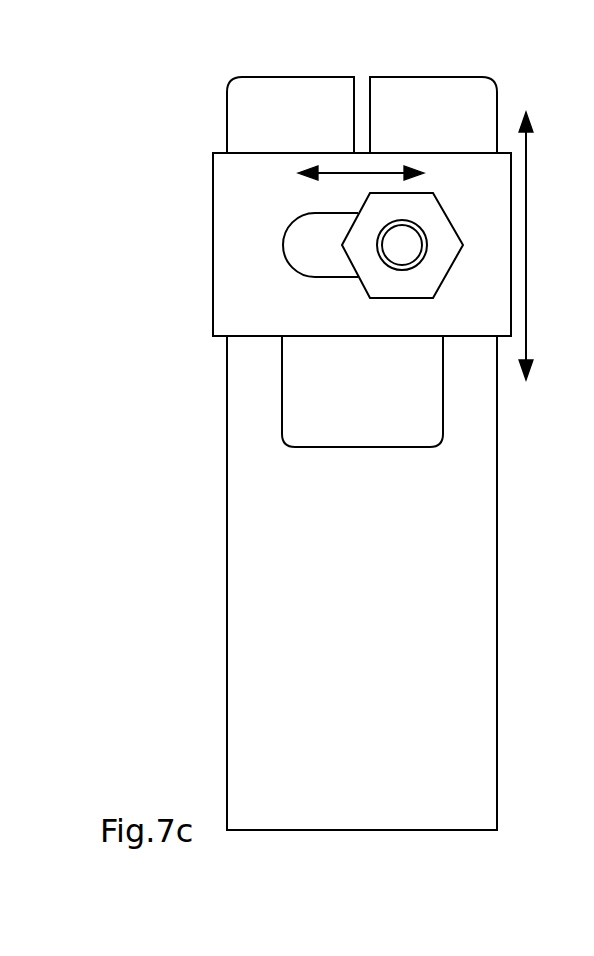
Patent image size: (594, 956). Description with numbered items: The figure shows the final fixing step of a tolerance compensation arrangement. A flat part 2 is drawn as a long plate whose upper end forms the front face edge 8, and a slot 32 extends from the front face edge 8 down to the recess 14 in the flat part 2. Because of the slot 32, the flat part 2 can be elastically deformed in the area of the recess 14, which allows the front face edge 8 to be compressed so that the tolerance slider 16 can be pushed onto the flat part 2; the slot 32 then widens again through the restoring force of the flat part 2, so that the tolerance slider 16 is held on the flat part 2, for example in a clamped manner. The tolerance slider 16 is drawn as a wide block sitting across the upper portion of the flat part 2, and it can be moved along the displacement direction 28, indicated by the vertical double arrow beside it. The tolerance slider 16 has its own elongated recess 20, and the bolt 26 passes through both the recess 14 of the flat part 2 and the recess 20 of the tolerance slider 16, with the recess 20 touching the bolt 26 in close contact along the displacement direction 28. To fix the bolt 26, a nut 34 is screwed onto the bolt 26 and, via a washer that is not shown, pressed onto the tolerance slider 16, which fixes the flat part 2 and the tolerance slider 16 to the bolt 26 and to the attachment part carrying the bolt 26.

The flat part 2 is at (473, 519).
The front face edge 8 is at (410, 77).
The recess 14 is at (407, 411).
The tolerance slider 16 is at (233, 203).
The recess 20 is at (323, 249).
The bolt 26 is at (407, 245).
The displacement direction 28 is at (527, 273).
The slot 32 is at (362, 93).
The nut 34 is at (427, 209).